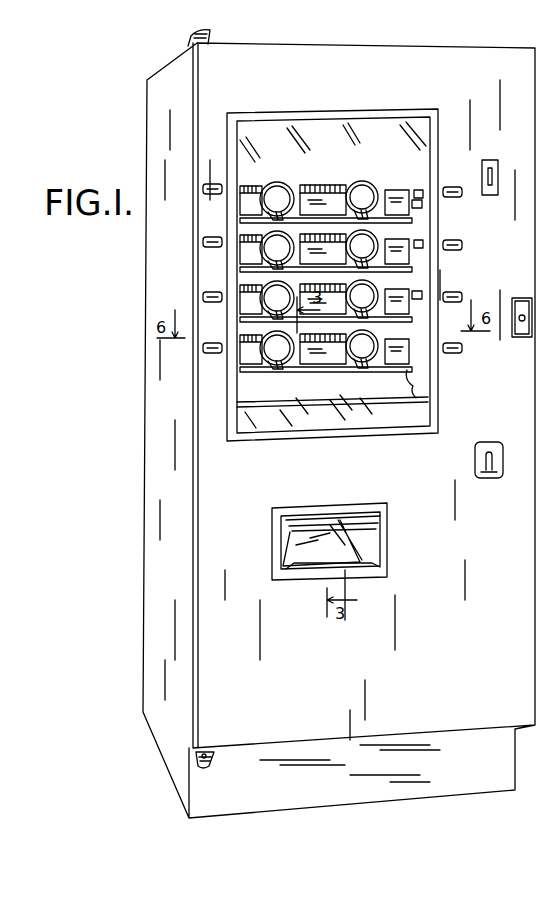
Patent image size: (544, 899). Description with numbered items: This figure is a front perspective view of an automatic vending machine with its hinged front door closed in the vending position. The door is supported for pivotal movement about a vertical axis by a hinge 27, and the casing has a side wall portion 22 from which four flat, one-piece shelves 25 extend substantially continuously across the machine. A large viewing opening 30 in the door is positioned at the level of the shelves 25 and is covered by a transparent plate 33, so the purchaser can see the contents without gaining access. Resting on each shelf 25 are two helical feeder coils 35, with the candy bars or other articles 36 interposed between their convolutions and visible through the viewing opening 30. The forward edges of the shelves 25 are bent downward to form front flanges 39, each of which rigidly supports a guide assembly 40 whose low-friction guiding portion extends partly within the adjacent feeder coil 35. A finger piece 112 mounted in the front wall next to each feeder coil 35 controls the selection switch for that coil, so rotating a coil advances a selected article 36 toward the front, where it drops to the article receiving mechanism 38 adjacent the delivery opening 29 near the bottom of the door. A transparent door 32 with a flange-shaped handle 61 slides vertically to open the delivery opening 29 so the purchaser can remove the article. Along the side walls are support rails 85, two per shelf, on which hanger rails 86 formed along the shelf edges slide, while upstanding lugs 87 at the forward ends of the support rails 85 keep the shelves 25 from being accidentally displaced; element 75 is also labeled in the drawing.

The side wall portion 22 is at (150, 712).
The shelves 25 is at (245, 218).
The hinge 27 is at (206, 766).
The delivery opening 29 is at (283, 538).
The viewing opening 30 is at (245, 122).
The transparent door 32 is at (317, 525).
The transparent plate 33 is at (330, 126).
The helical feeder coils 35 is at (368, 185).
The articles 36 is at (295, 188).
The article receiving mechanism 38 is at (375, 545).
The front flanges 39 is at (386, 317).
The guide assembly 40 is at (272, 381).
The handle 61 is at (352, 572).
The shelf bracket 75 is at (242, 358).
The support rails 85 is at (425, 198).
The hanger rail 86 is at (415, 200).
The upstanding lug 87 is at (423, 191).
The finger piece 112 is at (203, 189).